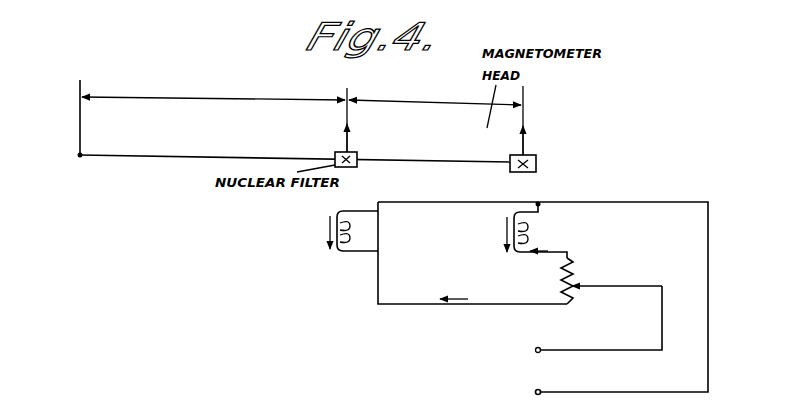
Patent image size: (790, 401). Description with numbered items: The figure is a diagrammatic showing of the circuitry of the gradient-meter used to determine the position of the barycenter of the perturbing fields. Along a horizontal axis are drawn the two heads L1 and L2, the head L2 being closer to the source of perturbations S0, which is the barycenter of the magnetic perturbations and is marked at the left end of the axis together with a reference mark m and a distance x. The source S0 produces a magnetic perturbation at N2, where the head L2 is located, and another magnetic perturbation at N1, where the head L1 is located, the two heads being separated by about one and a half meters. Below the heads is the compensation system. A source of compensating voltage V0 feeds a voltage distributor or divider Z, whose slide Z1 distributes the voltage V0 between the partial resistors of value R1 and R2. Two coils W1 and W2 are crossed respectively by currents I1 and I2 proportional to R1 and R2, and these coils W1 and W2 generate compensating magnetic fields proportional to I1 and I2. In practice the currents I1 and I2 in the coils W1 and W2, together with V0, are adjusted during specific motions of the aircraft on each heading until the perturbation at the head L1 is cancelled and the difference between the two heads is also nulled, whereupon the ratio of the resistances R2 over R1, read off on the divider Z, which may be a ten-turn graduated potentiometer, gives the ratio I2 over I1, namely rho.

The source of perturbations S0 is at (50, 152).
The distance mark m is at (95, 124).
The distance x is at (213, 87).
The location of head L2 N2 is at (335, 155).
The head L2 is at (357, 154).
The location of head L1 N1 is at (536, 162).
The head L1 is at (510, 158).
The compensation coil W1 is at (518, 214).
The compensation coil W2 is at (361, 233).
The current I1 is at (549, 243).
The current I2 is at (459, 291).
The voltage distributor or divider Z is at (565, 300).
The partial resistor R1 is at (573, 272).
The partial resistor R2 is at (571, 291).
The slide Z1 is at (583, 284).
The source of compensating voltage V0 is at (527, 371).